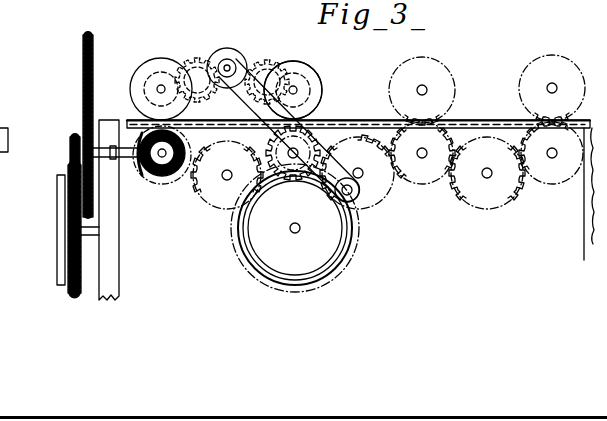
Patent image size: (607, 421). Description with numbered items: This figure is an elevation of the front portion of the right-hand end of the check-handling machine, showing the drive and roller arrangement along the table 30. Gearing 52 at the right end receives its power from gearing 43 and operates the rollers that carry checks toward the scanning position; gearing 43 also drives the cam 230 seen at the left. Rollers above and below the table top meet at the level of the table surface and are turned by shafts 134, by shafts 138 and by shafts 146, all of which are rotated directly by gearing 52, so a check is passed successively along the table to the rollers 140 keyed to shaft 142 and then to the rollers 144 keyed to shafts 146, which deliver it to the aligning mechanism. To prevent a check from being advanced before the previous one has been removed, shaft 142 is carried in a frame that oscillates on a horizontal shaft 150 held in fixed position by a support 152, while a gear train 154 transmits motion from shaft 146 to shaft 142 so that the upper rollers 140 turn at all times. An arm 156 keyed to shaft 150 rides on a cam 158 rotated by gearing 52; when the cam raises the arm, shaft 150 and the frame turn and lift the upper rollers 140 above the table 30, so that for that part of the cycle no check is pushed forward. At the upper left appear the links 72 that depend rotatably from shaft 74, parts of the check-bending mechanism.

The table 30 is at (499, 120).
The gearing 43 is at (83, 108).
The gearing 52 is at (381, 200).
The links 72 is at (0, 10).
The shaft 74 is at (0, 47).
The shafts 134 is at (553, 84).
The shafts 138 is at (427, 89).
The rollers 140 is at (323, 74).
The shaft 142 is at (294, 86).
The rollers 144 is at (161, 58).
The shafts 146 is at (162, 158).
The horizontal shaft 150 is at (230, 62).
The support 152 is at (226, 122).
The gear train 154 is at (195, 58).
The arm 156 is at (318, 157).
The cam 158 is at (343, 261).
The cam 230 is at (57, 218).